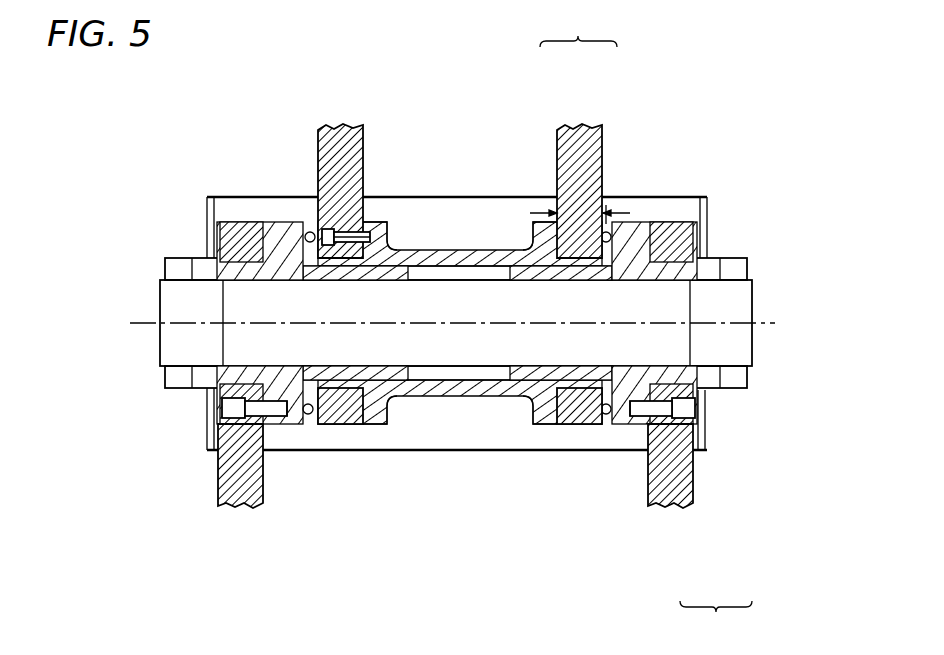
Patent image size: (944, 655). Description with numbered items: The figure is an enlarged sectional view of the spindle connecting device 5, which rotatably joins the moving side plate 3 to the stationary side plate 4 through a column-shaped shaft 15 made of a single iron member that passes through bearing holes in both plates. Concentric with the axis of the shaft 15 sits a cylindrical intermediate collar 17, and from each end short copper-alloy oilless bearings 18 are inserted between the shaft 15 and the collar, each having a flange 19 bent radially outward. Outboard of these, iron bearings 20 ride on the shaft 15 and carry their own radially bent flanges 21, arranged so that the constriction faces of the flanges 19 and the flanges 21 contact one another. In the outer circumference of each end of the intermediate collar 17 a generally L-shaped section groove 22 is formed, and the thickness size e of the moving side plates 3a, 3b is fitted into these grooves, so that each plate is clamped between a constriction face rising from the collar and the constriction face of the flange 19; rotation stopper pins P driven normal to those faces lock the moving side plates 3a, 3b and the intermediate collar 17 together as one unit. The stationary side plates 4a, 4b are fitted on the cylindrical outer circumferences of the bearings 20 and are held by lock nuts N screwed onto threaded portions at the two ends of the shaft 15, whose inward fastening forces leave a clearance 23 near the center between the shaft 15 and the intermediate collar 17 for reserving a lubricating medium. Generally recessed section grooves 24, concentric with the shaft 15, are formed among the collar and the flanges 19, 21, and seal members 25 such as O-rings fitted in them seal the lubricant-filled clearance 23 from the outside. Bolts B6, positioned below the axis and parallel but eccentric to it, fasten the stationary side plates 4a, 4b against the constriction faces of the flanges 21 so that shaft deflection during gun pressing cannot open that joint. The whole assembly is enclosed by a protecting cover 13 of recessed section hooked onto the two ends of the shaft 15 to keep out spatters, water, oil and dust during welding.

The moving side plate 3 is at (578, 28).
The moving side plate 3a is at (340, 127).
The moving side plate 3b is at (568, 127).
The stationary side plate 4 is at (716, 620).
The stationary side plate 4a is at (222, 220).
The stationary side plate 4b is at (707, 200).
The spindle connecting device 5 is at (436, 102).
The protecting cover 13 is at (207, 203).
The shaft 15 is at (745, 290).
The intermediate collar 17 is at (458, 250).
The oilless bearing 18 is at (393, 249).
The flange 19 is at (306, 231).
The bearing 20 is at (250, 222).
The flange 21 is at (255, 228).
The generally L-shaped section groove 22 is at (372, 224).
The clearance 23 is at (458, 380).
The generally recessed section groove 24 is at (309, 229).
The seal member 25 is at (286, 420).
The lock nut N is at (175, 260).
The rotation stopper pin P is at (362, 233).
The bolt B6 is at (232, 422).
The thickness size e is at (573, 212).